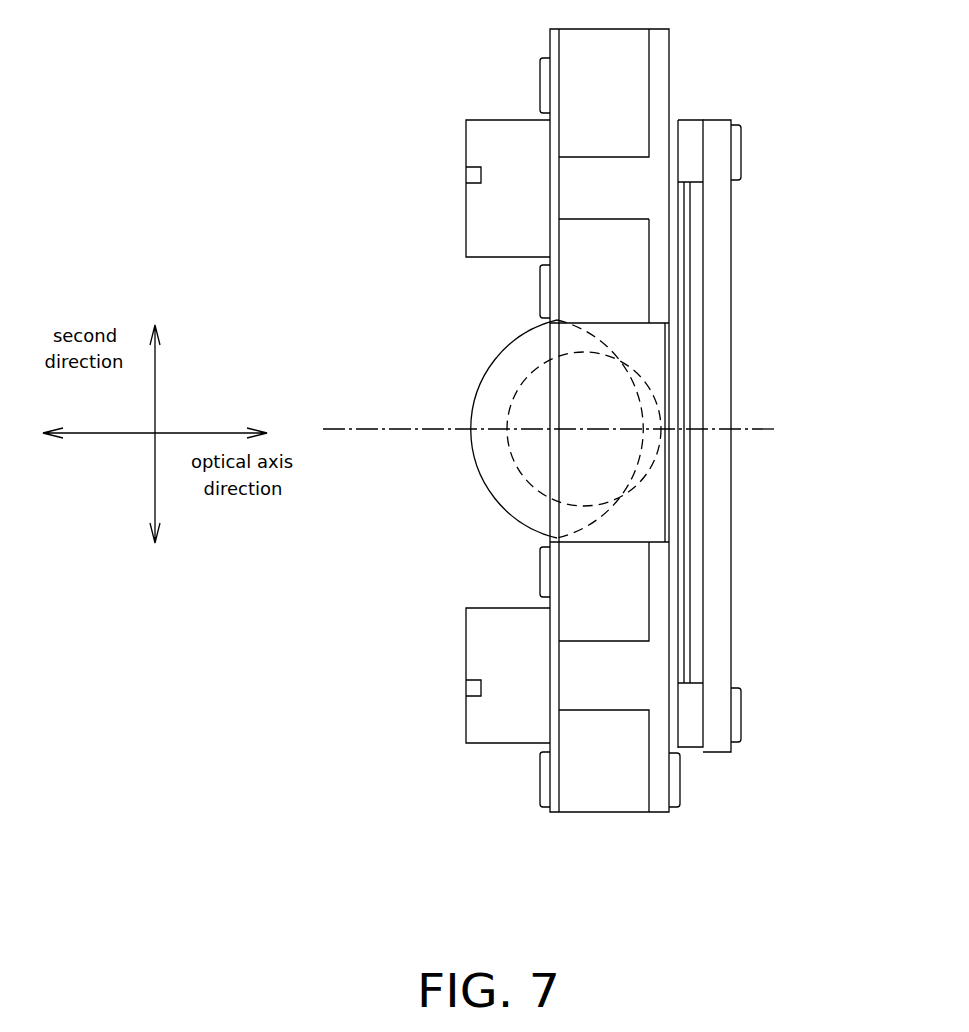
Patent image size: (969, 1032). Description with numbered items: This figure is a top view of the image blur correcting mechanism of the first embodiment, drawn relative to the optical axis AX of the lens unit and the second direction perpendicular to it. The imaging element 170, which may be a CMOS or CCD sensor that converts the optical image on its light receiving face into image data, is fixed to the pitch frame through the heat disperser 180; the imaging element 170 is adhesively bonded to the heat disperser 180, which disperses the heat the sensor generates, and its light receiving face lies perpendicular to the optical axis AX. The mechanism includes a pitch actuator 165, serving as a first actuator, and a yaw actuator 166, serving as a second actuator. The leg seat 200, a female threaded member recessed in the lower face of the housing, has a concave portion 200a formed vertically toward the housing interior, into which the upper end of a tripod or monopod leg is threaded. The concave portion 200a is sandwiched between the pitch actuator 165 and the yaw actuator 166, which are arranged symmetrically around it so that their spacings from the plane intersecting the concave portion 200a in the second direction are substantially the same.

The optical axis AX is at (382, 428).
The pitch actuator 165 is at (482, 228).
The yaw actuator 166 is at (493, 638).
The imaging element 170 is at (690, 527).
The heat disperser 180 is at (730, 307).
The leg seat 200 is at (473, 455).
The concave portion 200a is at (538, 462).